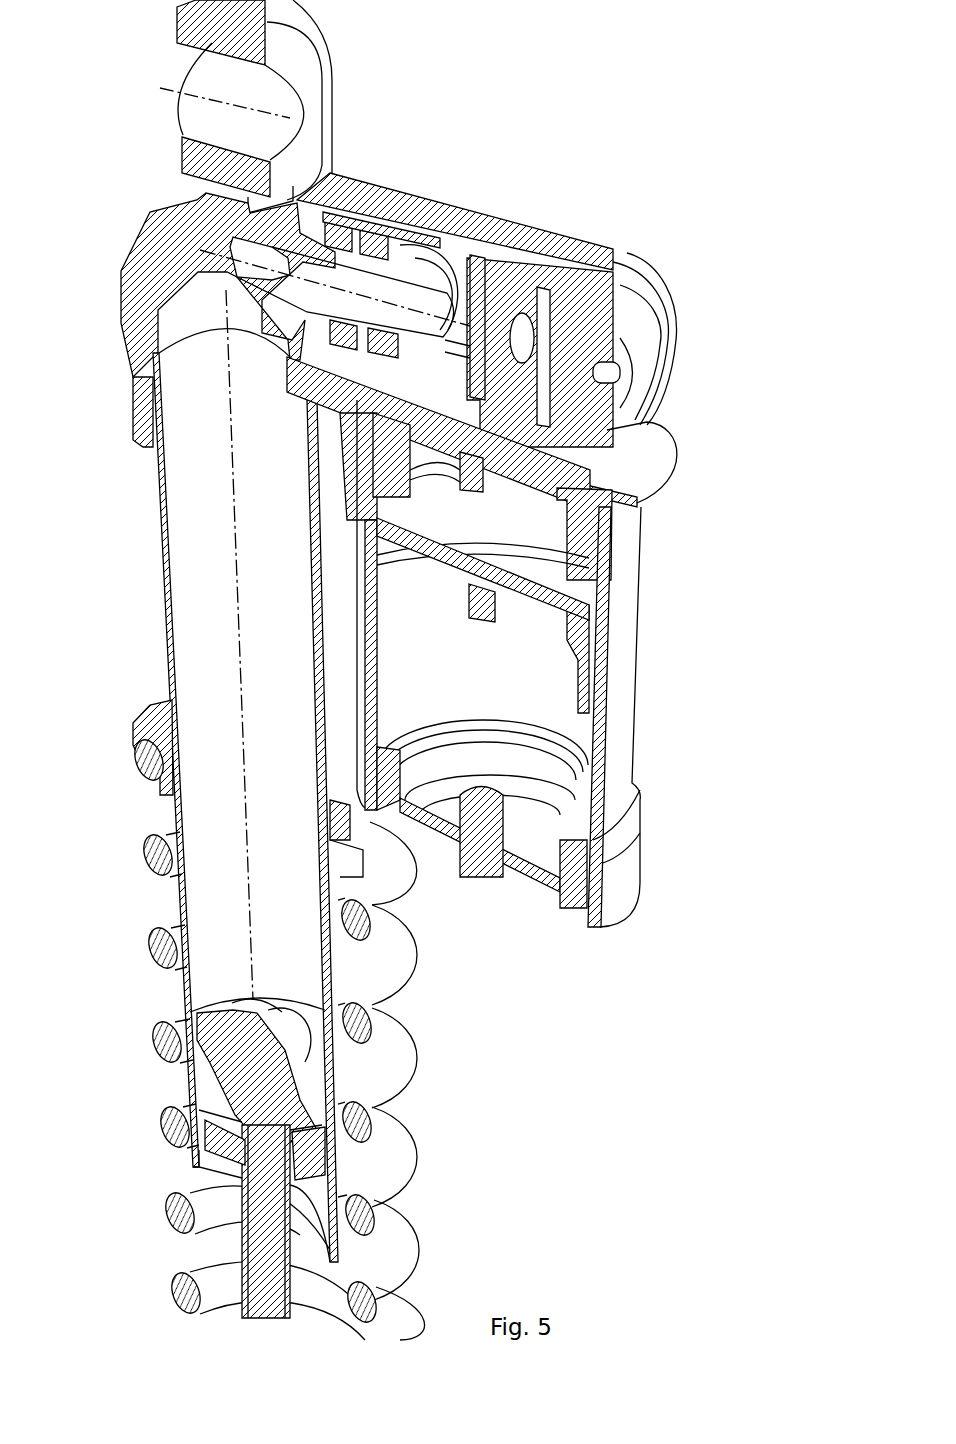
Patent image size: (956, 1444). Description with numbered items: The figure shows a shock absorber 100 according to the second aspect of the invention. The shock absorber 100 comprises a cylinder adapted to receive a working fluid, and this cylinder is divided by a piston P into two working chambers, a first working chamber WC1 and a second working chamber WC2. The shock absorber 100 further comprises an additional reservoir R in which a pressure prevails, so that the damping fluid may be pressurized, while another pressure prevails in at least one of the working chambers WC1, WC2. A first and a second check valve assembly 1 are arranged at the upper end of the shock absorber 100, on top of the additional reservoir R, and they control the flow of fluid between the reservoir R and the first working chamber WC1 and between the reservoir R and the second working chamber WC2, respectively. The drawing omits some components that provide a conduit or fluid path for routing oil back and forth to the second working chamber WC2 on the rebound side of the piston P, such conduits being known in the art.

The shock absorber 100 is at (562, 180).
The first check valve assembly 1 is at (465, 240).
The first working chamber WC1 is at (203, 577).
The second working chamber WC2 is at (207, 1107).
The additional reservoir R is at (529, 691).
The piston P is at (215, 1058).